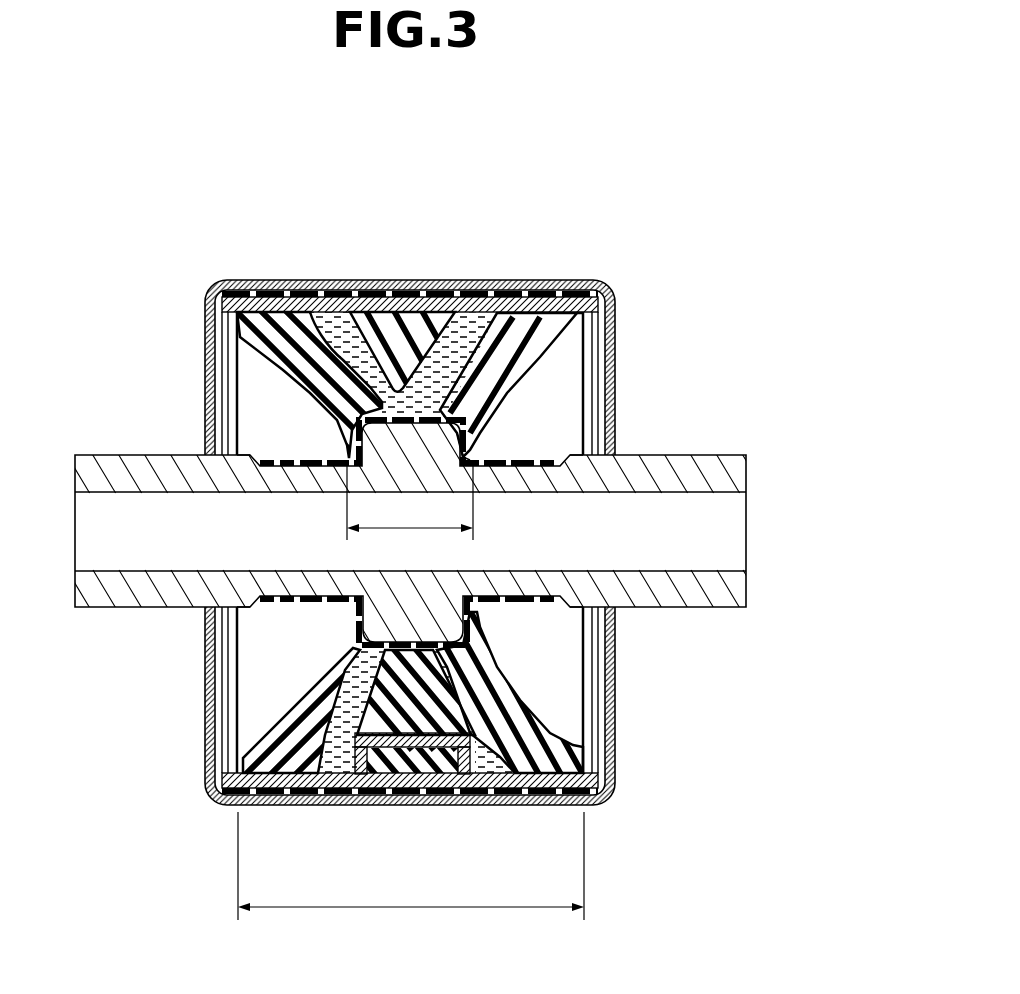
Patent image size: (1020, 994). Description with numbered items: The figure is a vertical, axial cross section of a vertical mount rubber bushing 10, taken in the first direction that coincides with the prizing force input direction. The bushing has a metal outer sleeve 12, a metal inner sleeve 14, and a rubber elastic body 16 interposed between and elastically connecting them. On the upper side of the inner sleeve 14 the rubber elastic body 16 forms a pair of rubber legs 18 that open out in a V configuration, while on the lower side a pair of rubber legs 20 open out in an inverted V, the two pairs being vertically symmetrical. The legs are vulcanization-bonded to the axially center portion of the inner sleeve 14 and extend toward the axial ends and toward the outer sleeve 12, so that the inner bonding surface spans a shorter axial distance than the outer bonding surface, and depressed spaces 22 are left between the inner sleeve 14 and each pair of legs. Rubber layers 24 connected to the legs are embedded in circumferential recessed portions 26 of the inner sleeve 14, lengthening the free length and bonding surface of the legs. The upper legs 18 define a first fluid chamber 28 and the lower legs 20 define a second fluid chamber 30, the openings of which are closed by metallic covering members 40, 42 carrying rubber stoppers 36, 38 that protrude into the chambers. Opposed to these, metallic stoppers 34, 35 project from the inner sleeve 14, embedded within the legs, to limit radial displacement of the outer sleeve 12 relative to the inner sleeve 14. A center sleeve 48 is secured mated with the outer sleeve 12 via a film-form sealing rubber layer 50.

The vertical mount rubber bushing 10 is at (434, 214).
The outer sleeve 12 is at (318, 279).
The inner sleeve 14 is at (726, 452).
The rubber elastic body 16 is at (262, 368).
The rubber legs 18 is at (245, 342).
The rubber legs 20 is at (290, 712).
The depressed spaces 22 is at (252, 424).
The rubber layers 24 is at (302, 468).
The recessed portions 26 is at (262, 468).
The first fluid chamber 28 is at (515, 318).
The second fluid chamber 30 is at (548, 744).
The metallic stopper 34 is at (478, 434).
The metallic stopper 35 is at (360, 622).
The rubber stopper 36 is at (378, 312).
The rubber stopper 38 is at (455, 668).
The covering member 40 is at (455, 312).
The covering member 42 is at (496, 798).
The center sleeve 48 is at (258, 800).
The sealing rubber layer 50 is at (512, 320).